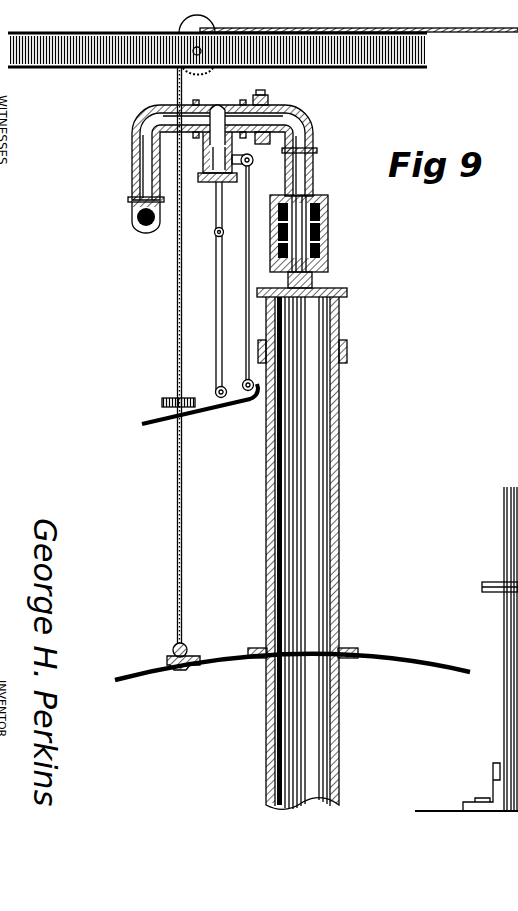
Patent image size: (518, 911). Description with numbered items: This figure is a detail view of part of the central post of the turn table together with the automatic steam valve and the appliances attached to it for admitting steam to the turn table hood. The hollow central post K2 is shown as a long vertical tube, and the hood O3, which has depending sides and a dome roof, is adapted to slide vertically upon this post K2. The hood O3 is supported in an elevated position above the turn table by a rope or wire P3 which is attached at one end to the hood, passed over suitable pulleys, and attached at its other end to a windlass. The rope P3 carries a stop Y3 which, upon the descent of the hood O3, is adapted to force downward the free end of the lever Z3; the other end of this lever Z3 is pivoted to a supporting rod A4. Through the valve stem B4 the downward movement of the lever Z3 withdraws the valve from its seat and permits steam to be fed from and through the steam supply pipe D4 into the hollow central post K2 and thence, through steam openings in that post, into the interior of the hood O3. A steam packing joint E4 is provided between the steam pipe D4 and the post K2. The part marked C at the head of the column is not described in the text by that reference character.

The steam supply pipe D4 is at (310, 136).
The cylinder head column C is at (217, 143).
The rope P3 is at (177, 478).
The valve stem B4 is at (216, 280).
The supporting rod A4 is at (246, 336).
The lever Z3 is at (220, 410).
The stop Y3 is at (167, 402).
The steam packing joint E4 is at (329, 238).
The post K2 is at (339, 484).
The hood O3 is at (221, 668).